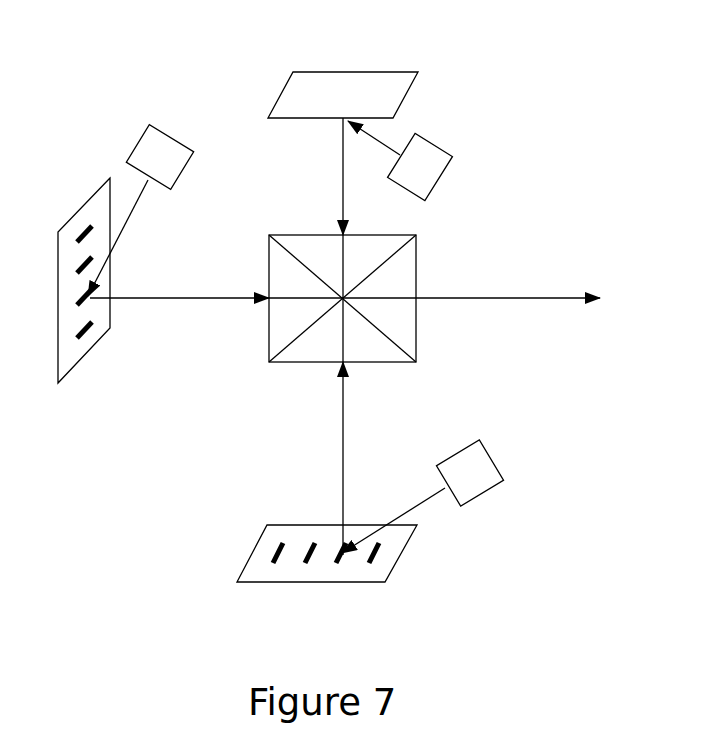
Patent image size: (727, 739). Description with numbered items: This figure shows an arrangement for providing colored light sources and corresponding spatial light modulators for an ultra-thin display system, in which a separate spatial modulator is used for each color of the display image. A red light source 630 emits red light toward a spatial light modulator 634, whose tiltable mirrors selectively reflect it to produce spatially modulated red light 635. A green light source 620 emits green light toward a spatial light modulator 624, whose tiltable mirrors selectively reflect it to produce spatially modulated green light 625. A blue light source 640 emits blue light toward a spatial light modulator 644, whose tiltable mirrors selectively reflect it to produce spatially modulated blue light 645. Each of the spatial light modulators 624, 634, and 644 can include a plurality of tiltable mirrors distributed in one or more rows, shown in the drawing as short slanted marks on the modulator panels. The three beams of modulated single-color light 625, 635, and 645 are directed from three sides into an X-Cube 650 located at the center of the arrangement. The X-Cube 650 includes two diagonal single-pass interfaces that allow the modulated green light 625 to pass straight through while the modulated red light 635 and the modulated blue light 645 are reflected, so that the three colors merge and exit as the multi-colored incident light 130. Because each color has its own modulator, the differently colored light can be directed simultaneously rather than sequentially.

The incident light 130 is at (508, 282).
The green light source 620 is at (173, 138).
The spatial light modulator 624 is at (90, 358).
The spatially modulated green light 625 is at (179, 323).
The red light source 630 is at (438, 138).
The spatial light modulator 634 is at (348, 95).
The spatially modulated red light 635 is at (318, 176).
The blue light source 640 is at (495, 458).
The spatial light modulator 644 is at (320, 583).
The spatially modulated blue light 645 is at (313, 458).
The X-Cube 650 is at (420, 272).